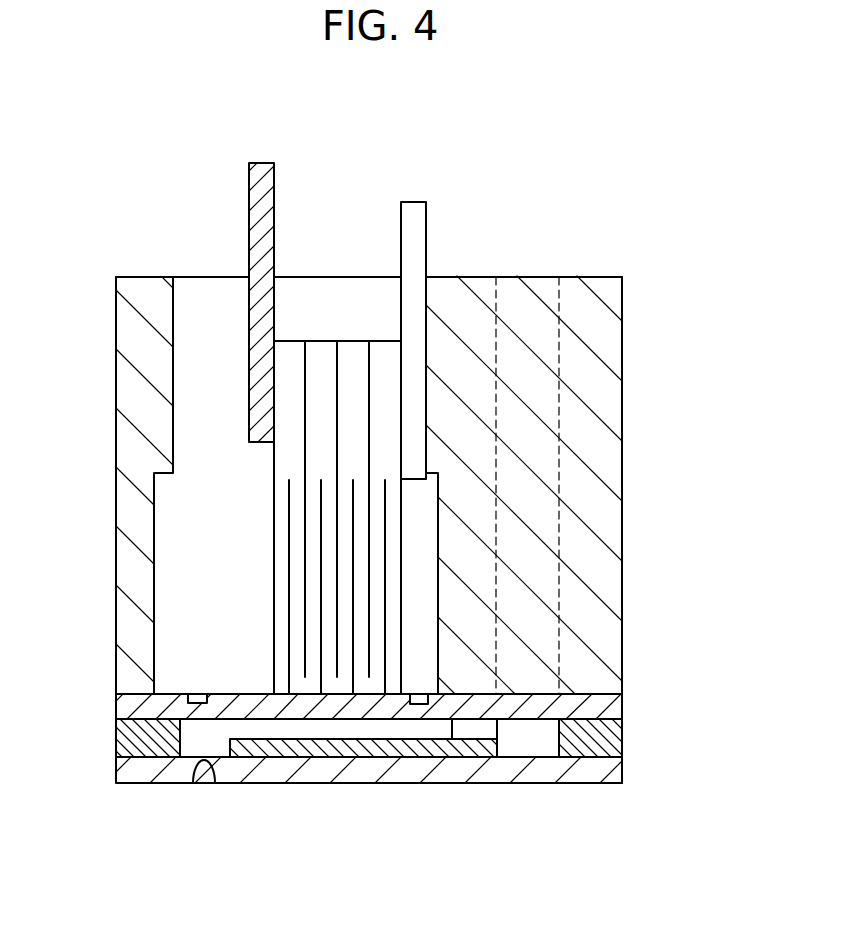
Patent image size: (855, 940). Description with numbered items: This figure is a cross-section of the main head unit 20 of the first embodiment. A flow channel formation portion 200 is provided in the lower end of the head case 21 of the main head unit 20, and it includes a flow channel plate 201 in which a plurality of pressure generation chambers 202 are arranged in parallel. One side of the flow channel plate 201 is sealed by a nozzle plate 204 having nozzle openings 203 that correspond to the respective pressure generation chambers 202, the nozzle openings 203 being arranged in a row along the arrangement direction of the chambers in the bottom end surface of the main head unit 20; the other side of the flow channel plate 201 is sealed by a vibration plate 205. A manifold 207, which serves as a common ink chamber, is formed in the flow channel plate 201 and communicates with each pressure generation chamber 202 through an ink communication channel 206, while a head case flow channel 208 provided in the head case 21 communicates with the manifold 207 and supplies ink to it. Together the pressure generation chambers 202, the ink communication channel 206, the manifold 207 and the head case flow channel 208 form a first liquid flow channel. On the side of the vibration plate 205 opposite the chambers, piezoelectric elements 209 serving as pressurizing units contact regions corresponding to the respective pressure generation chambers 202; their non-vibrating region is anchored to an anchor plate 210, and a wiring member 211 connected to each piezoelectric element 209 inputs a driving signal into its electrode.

The main head unit 20 is at (526, 128).
The head case 21 is at (613, 468).
The flow channel formation portion 200 is at (597, 814).
The flow channel plate 201 is at (125, 742).
The pressure generation chambers 202 is at (345, 728).
The nozzle openings 203 is at (198, 760).
The nozzle plate 204 is at (138, 773).
The vibration plate 205 is at (125, 707).
The ink communication channel 206 is at (472, 730).
The manifold 207 is at (530, 750).
The head case flow channel 208 is at (540, 290).
The piezoelectric elements 209 is at (295, 341).
The anchor plate 210 is at (414, 215).
The wiring member 211 is at (258, 203).